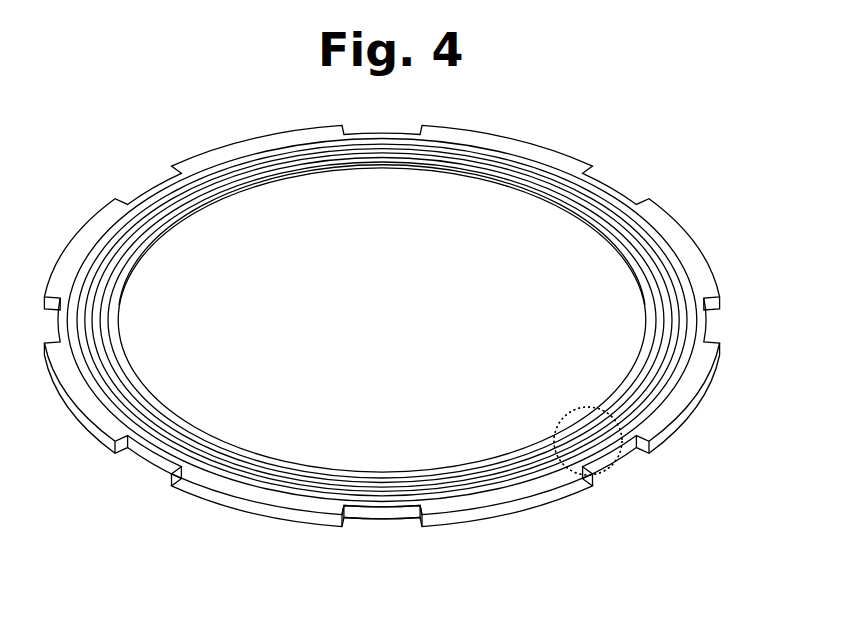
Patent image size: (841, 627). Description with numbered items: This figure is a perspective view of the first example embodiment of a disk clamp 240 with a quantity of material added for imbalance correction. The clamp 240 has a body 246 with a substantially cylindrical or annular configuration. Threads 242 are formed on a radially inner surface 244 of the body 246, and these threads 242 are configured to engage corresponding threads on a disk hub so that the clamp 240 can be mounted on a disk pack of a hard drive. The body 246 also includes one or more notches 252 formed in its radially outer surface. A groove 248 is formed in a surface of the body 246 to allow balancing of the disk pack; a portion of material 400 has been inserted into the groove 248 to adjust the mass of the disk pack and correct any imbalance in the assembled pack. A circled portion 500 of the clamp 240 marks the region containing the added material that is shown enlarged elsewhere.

The disk clamp 240 is at (161, 504).
The threads 242 is at (263, 180).
The radially inner surface 244 is at (125, 272).
The body 246 is at (460, 512).
The groove 248 is at (646, 254).
The notches 252 is at (378, 520).
The portion of material 400 is at (583, 435).
The portion 500 is at (606, 463).